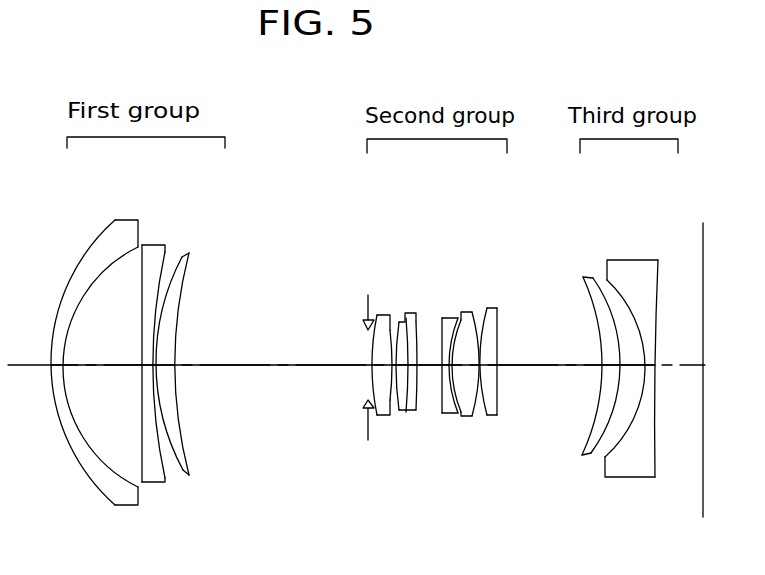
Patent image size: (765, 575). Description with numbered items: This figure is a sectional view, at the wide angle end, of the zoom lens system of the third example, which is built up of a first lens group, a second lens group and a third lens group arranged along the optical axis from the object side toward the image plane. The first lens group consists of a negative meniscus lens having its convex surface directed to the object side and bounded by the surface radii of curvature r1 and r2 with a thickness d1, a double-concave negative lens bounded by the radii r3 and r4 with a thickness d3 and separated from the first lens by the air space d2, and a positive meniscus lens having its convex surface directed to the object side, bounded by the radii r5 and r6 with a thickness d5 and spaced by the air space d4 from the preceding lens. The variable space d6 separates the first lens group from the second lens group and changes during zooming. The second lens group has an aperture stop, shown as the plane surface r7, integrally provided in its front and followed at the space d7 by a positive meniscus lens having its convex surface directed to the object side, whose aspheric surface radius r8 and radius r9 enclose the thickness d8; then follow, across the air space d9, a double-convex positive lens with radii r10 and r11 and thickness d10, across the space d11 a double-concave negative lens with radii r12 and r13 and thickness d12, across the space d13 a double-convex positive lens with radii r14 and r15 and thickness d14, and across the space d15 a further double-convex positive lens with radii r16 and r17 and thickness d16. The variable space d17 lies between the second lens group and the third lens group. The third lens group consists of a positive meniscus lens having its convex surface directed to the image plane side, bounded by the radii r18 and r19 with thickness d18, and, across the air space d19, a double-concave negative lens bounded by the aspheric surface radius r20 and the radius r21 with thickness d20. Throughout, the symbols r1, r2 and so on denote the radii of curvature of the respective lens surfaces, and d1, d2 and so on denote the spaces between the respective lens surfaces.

The radius of curvature of first lens surface r1 is at (88, 250).
The radius of curvature of second lens surface r2 is at (116, 262).
The radius of curvature of third lens surface r3 is at (143, 243).
The radius of curvature of fourth lens surface r4 is at (167, 256).
The radius of curvature of fifth lens surface r5 is at (181, 256).
The radius of curvature of sixth lens surface r6 is at (192, 270).
The aperture stop surface r7 is at (366, 308).
The radius of curvature of eighth lens surface r8 is at (385, 322).
The radius of curvature of ninth lens surface r9 is at (396, 322).
The radius of curvature of tenth lens surface r10 is at (408, 320).
The radius of curvature of eleventh lens surface r11 is at (418, 322).
The radius of curvature of twelfth lens surface r12 is at (441, 320).
The radius of curvature of thirteenth lens surface r13 is at (455, 320).
The radius of curvature of fourteenth lens surface r14 is at (465, 312).
The radius of curvature of fifteenth lens surface r15 is at (476, 320).
The radius of curvature of sixteenth lens surface r16 is at (490, 312).
The radius of curvature of seventeenth lens surface r17 is at (499, 324).
The radius of curvature of eighteenth lens surface r18 is at (583, 292).
The radius of curvature of nineteenth lens surface r19 is at (584, 276).
The radius of curvature of twentieth lens surface r20 is at (610, 284).
The radius of curvature of twenty-first lens surface r21 is at (652, 283).
The space between first and second lens surfaces d1 is at (51, 367).
The space between second and third lens surfaces d2 is at (100, 367).
The space between third and fourth lens surfaces d3 is at (143, 373).
The space between fourth and fifth lens surfaces d4 is at (165, 437).
The space between fifth and sixth lens surfaces d5 is at (167, 367).
The space between sixth and seventh lens surfaces d6 is at (275, 367).
The space between seventh and eighth lens surfaces d7 is at (364, 368).
The space between eighth and ninth lens surfaces d8 is at (379, 418).
The space between ninth and tenth lens surfaces d9 is at (389, 425).
The space between tenth and eleventh lens surfaces d10 is at (408, 422).
The space between eleventh and twelfth lens surfaces d11 is at (428, 370).
The space between twelfth and thirteenth lens surfaces d12 is at (448, 420).
The space between thirteenth and fourteenth lens surfaces d13 is at (472, 425).
The space between fourteenth and fifteenth lens surfaces d14 is at (477, 422).
The space between fifteenth and sixteenth lens surfaces d15 is at (486, 425).
The space between sixteenth and seventeenth lens surfaces d16 is at (493, 373).
The space between seventeenth and eighteenth lens surfaces d17 is at (548, 367).
The space between eighteenth and nineteenth lens surfaces d18 is at (600, 392).
The space between nineteenth and twentieth lens surfaces d19 is at (606, 447).
The space between twentieth and twenty-first lens surfaces d20 is at (653, 392).